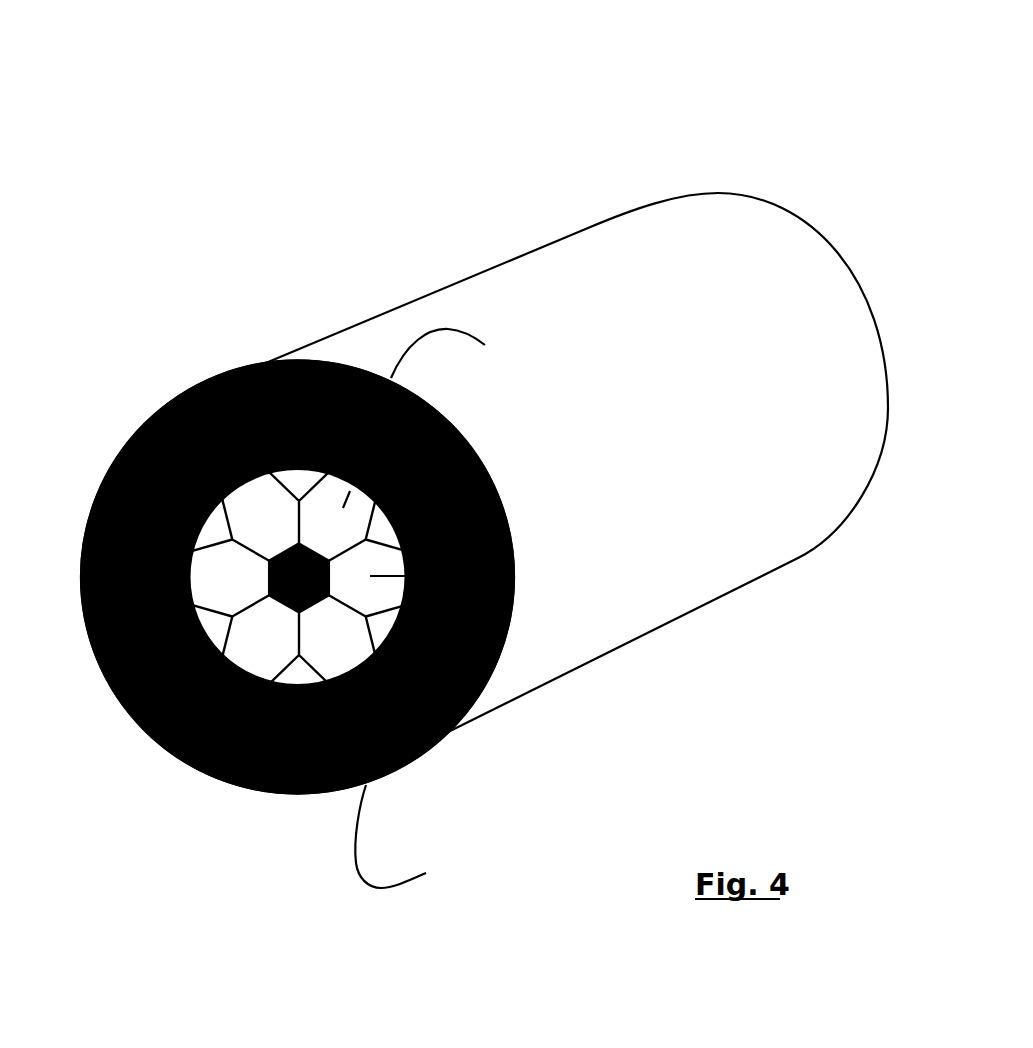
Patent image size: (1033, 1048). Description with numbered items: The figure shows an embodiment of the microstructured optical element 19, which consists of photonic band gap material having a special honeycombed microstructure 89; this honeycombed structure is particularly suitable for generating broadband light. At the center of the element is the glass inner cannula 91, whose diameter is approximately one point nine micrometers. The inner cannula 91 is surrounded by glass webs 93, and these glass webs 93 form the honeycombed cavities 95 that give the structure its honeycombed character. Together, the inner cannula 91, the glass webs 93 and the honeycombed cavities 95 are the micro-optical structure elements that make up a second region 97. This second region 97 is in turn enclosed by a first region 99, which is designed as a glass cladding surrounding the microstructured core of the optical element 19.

The microstructured optical element 19 is at (364, 196).
The honeycombed microstructure 89 is at (194, 808).
The glass inner cannula 91 is at (260, 569).
The glass webs 93 is at (291, 508).
The honeycombed cavities 95 is at (495, 481).
The second region 97 is at (117, 435).
The first region 99 is at (424, 608).